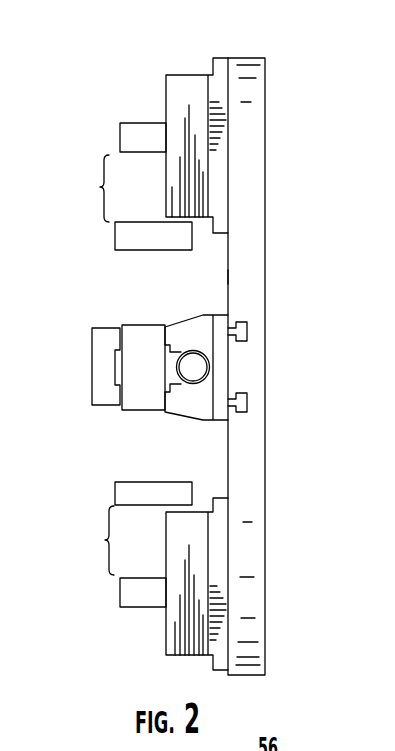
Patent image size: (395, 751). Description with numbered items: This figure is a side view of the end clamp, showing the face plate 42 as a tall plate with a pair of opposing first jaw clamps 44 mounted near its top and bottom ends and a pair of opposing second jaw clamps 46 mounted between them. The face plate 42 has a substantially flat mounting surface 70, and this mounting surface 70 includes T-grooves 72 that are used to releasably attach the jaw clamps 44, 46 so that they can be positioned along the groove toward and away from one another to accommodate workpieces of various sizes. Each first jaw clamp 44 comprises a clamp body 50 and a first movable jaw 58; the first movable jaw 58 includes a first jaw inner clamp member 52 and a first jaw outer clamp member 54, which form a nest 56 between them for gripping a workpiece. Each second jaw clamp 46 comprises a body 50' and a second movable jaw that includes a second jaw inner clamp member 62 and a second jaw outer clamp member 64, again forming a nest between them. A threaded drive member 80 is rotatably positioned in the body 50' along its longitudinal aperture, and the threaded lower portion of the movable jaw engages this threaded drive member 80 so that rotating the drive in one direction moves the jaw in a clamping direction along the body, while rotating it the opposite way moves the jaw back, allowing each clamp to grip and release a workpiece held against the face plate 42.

The face plate 42 is at (265, 203).
The first jaw clamps 44 is at (157, 46).
The second jaw clamps 46 is at (83, 400).
The clamp body 50 is at (247, 336).
The body 50' is at (239, 367).
The first jaw inner clamp member 52 is at (115, 242).
The first jaw outer clamp member 54 is at (120, 139).
The nest 56 is at (100, 186).
The first movable jaw 58 is at (147, 121).
The second jaw inner clamp member 62 is at (103, 337).
The second jaw outer clamp member 64 is at (138, 368).
The mounting surface 70 is at (228, 277).
The T-grooves 72 is at (246, 330).
The threaded drive member 80 is at (193, 368).